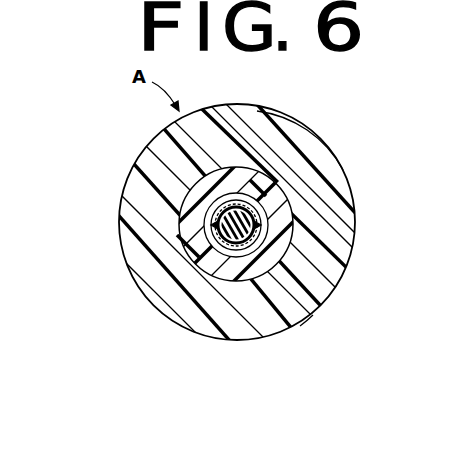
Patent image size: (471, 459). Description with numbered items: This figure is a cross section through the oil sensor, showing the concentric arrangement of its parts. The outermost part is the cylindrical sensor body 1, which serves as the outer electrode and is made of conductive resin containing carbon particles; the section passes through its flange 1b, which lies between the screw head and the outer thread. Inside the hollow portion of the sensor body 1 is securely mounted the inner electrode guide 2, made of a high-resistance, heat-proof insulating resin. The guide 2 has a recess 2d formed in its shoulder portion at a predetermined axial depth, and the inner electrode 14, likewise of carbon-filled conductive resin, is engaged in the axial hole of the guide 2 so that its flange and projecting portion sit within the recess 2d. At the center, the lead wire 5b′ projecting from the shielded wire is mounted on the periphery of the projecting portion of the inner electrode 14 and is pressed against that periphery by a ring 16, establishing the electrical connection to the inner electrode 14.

The sensor body 1 is at (147, 155).
The flange 1b is at (343, 170).
The inner electrode guide 2 is at (137, 170).
The recess 2d is at (258, 203).
The inner electrode 14 is at (212, 222).
The ring 16 is at (246, 241).
The lead wire 5b′ is at (313, 315).